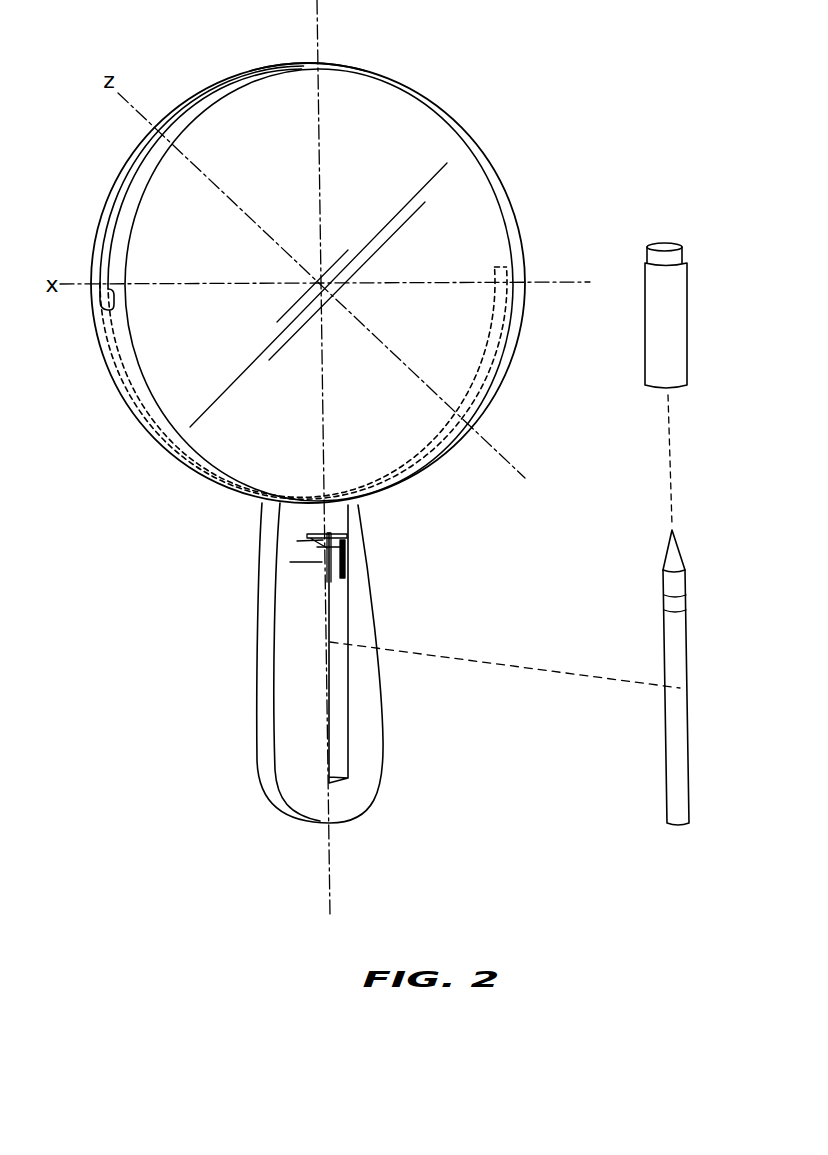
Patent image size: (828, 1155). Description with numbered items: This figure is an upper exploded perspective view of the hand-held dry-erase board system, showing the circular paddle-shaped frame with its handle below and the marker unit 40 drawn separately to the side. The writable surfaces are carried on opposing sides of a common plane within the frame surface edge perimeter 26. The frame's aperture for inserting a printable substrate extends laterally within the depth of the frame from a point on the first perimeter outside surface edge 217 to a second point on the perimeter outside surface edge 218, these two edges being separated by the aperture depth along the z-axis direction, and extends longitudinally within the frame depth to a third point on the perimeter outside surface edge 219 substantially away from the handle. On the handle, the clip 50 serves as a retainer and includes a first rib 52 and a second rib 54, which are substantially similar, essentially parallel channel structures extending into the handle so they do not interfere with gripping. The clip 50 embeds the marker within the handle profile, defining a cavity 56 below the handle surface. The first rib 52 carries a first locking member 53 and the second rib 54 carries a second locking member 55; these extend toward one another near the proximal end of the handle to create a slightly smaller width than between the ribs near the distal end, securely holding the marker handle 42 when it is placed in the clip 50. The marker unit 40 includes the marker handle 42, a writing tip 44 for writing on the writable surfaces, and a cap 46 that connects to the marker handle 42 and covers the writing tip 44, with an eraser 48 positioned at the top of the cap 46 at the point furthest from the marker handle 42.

The surface edge perimeter 26 is at (457, 113).
The perimeter outside surface edge 219 is at (309, 62).
The first perimeter outside surface edge 217 is at (108, 310).
The perimeter outside surface edge 218 is at (520, 268).
The cavity 56 is at (338, 722).
The clip 50 is at (350, 587).
The first rib 52 is at (347, 535).
The first locking member 53 is at (347, 562).
The second rib 54 is at (297, 541).
The second locking member 55 is at (290, 562).
The marker unit 40 is at (652, 581).
The marker handle 42 is at (677, 707).
The writing tip 44 is at (673, 550).
The cap 46 is at (660, 333).
The eraser 48 is at (657, 255).